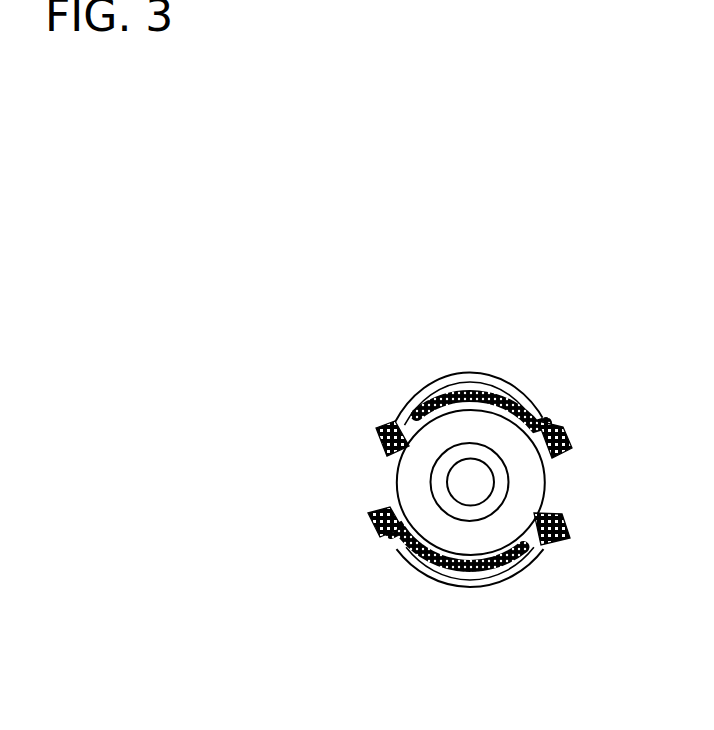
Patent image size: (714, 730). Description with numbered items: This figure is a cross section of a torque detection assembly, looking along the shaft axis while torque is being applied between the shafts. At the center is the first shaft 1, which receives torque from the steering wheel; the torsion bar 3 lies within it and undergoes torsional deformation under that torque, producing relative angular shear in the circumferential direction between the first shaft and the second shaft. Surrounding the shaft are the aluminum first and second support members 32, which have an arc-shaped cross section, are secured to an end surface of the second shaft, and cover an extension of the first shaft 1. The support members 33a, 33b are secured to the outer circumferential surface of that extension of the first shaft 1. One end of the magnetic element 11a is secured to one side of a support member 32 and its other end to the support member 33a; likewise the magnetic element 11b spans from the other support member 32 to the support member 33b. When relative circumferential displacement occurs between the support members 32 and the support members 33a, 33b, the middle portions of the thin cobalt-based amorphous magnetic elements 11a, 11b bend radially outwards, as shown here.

The first shaft 1 is at (407, 490).
The torsion bar 3 is at (480, 476).
The magnetic element 11a is at (532, 570).
The magnetic element 11b is at (522, 389).
The first and second support member 32 is at (552, 421).
The support member 33a is at (545, 553).
The support member 33b is at (395, 421).